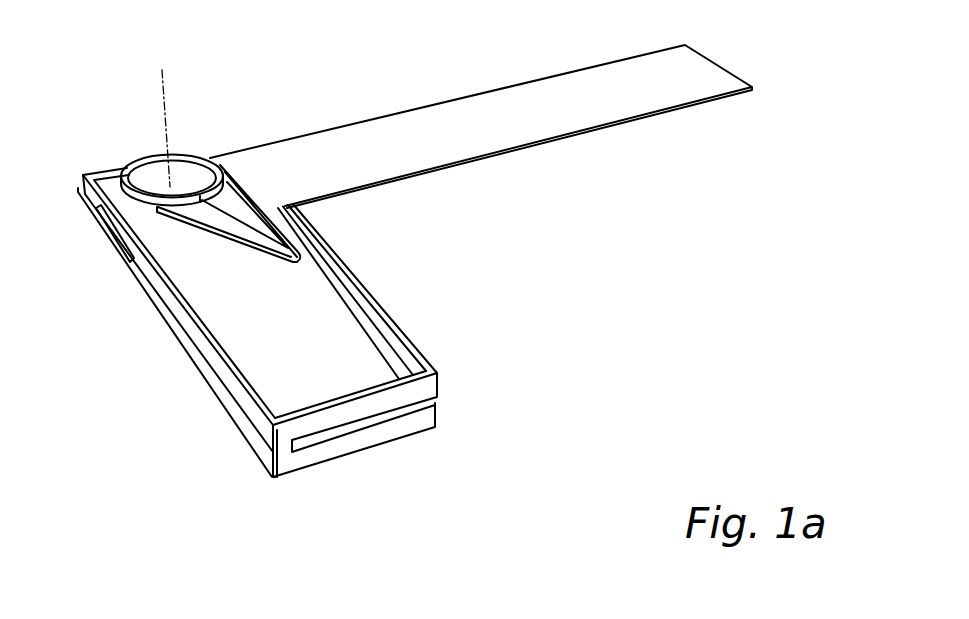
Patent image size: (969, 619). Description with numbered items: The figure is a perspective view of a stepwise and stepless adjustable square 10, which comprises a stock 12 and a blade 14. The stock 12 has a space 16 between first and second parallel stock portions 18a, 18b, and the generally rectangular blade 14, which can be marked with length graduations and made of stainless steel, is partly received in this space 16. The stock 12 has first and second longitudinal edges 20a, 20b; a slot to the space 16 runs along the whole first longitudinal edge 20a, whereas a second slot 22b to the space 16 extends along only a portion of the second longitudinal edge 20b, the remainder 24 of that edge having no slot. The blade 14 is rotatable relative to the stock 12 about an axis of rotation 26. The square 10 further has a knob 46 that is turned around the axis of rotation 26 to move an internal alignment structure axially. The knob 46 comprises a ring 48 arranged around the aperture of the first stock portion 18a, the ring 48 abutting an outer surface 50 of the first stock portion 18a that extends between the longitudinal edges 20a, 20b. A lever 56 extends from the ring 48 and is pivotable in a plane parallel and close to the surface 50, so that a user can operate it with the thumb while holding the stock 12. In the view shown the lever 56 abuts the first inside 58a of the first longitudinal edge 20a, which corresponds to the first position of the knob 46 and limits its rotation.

The adjustable square 10 is at (420, 57).
The stock 12 is at (287, 501).
The blade 14 is at (572, 118).
The space 16 is at (360, 424).
The first stock portion 18a is at (440, 382).
The second stock portion 18b is at (438, 418).
The first longitudinal edge 20a is at (400, 322).
The second longitudinal edge 20b is at (173, 333).
The second slot 22b is at (115, 240).
The remainder of the second longitudinal edge 24 is at (233, 410).
The axis of rotation 26 is at (170, 127).
The knob 46 is at (206, 243).
The ring 48 is at (127, 182).
The outer surface 50 is at (318, 367).
The lever 56 is at (255, 237).
The first inside 58a is at (330, 268).